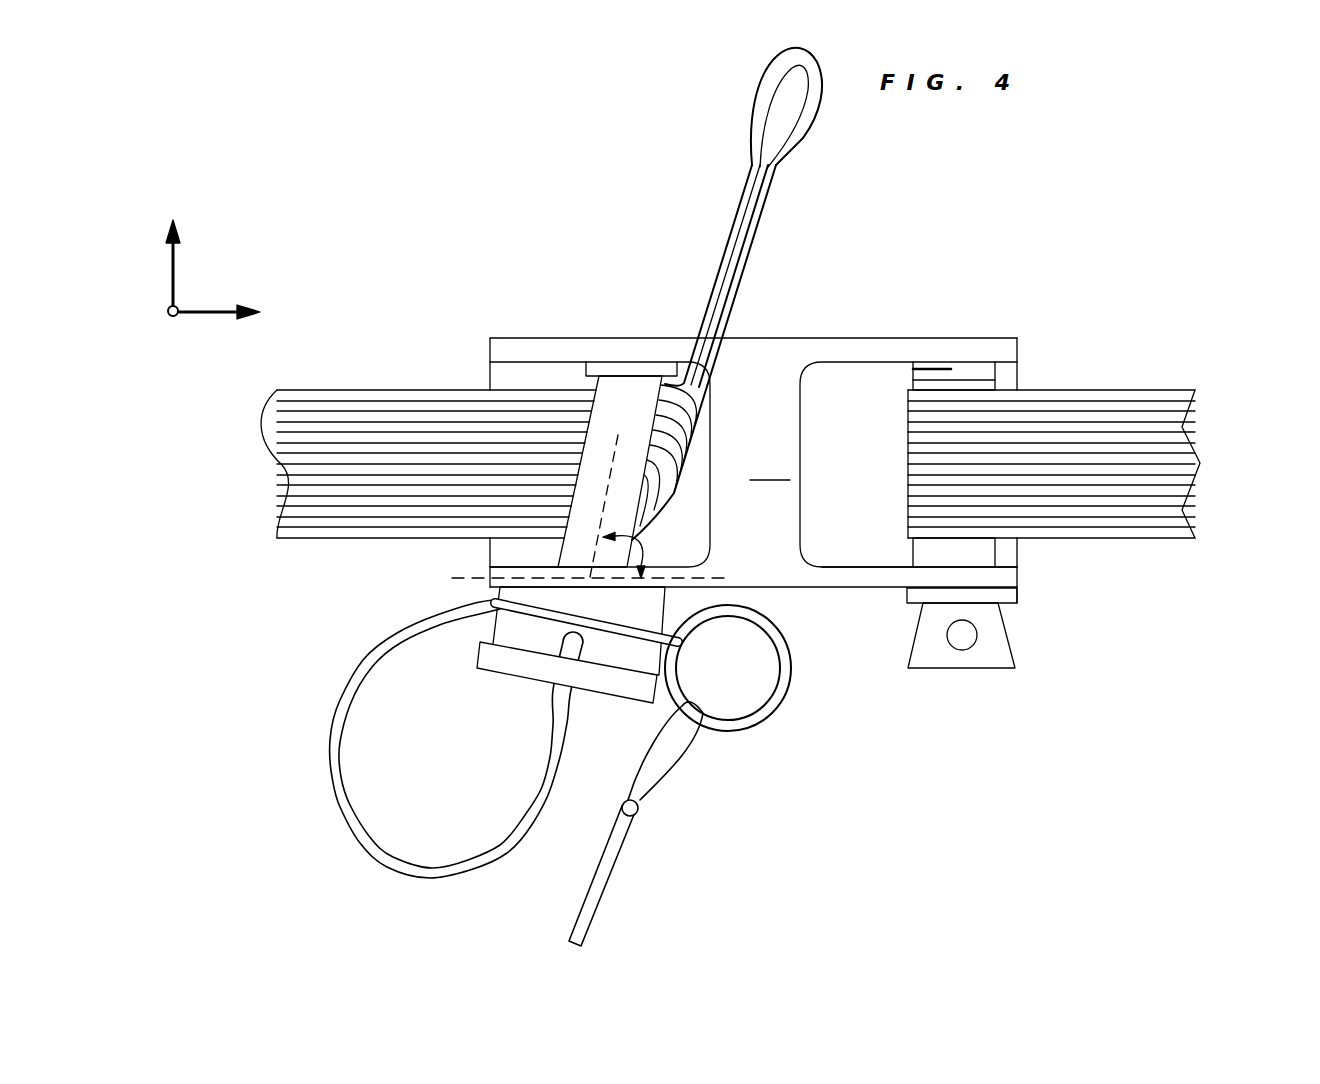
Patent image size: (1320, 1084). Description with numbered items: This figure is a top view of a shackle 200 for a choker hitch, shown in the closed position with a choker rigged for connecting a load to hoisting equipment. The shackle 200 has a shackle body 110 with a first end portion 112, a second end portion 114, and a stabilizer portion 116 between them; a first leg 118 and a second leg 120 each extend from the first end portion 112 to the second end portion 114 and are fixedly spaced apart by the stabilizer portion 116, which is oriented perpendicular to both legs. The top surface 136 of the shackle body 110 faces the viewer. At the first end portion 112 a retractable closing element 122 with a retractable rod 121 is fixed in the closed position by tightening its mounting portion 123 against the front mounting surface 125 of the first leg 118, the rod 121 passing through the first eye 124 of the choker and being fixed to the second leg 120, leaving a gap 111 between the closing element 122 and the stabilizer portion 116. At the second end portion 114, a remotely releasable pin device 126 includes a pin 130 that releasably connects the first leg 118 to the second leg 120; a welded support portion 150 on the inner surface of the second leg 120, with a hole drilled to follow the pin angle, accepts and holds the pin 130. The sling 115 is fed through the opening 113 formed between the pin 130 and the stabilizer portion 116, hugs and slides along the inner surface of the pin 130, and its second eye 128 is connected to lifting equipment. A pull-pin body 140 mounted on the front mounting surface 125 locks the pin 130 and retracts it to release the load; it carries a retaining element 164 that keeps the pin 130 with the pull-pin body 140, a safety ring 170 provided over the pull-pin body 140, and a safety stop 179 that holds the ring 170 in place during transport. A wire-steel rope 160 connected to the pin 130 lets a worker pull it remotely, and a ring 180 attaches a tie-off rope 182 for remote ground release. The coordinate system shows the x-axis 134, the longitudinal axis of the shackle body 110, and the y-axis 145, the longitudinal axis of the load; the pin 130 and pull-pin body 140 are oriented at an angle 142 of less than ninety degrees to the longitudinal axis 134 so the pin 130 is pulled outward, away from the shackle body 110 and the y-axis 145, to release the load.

The shackle body 110 is at (791, 340).
The gap 111 is at (857, 390).
The first end portion 112 is at (996, 324).
The opening 113 is at (688, 487).
The second end portion 114 is at (565, 332).
The sling 115 is at (727, 264).
The stabilizer portion 116 is at (780, 543).
The first leg 118 is at (872, 580).
The second leg 120 is at (917, 350).
The retractable rod 121 is at (978, 372).
The retractable closing element 122 is at (953, 668).
The mounting portion 123 is at (990, 652).
The first eye 124 is at (1022, 522).
The front mounting surface 125 is at (770, 587).
The remotely releasable pin device 126 is at (559, 781).
The second eye 128 is at (752, 99).
The pin 130 is at (623, 390).
The x-axis (longitudinal axis of the shackle body) 134 is at (208, 310).
The top surface 136 is at (831, 464).
The pull-pin body 140 is at (512, 630).
The angle 142 is at (620, 535).
The y-axis (longitudinal axis of the load) 145 is at (173, 262).
The welded support portion 150 is at (628, 362).
The wire-steel rope 160 is at (336, 792).
The retaining element 164 is at (593, 680).
The safety ring 170 is at (497, 603).
The safety stop 179 is at (565, 648).
The ring 180 is at (722, 733).
The tie-off rope 182 is at (622, 836).
The shackle 200 is at (1136, 266).